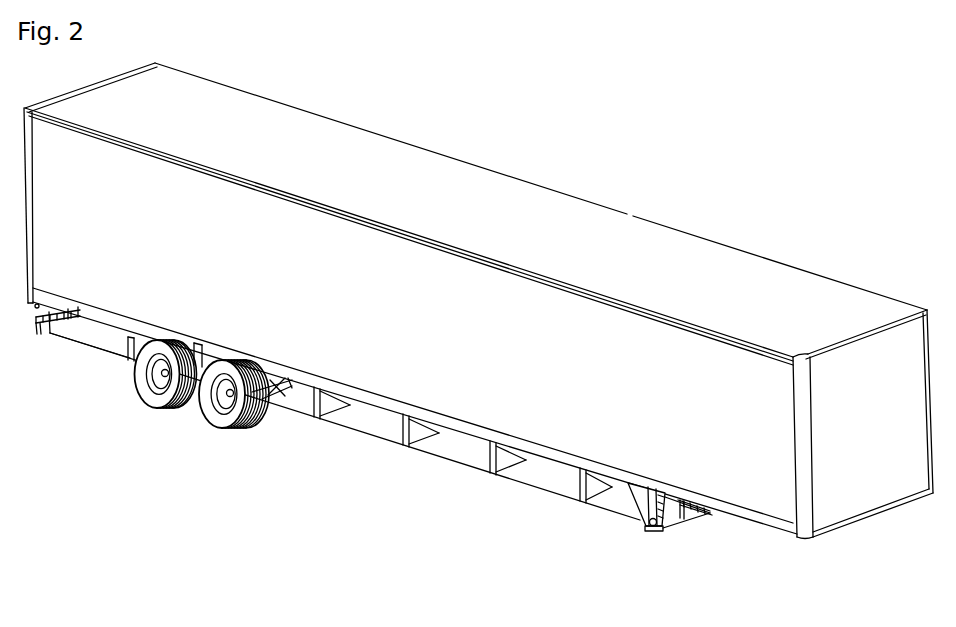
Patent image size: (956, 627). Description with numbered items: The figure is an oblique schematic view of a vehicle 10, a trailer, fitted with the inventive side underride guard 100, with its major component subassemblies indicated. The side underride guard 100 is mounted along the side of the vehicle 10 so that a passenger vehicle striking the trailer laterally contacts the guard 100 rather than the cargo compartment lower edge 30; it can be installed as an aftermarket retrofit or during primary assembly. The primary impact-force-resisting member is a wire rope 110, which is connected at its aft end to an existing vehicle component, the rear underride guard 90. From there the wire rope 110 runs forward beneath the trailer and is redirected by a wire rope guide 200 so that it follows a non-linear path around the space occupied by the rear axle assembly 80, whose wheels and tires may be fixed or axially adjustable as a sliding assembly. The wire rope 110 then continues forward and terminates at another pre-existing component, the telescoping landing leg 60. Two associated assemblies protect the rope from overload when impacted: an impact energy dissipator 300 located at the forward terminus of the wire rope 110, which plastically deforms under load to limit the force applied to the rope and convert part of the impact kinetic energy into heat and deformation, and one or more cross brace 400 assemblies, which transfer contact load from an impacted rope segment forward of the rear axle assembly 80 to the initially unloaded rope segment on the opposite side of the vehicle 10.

The vehicle 10 is at (548, 171).
The cargo compartment lower edge 30 is at (80, 321).
The telescoping landing leg 60 is at (653, 532).
The sliding rear axle assembly 80 is at (228, 429).
The rear underride guard 90 is at (37, 336).
The side underride guard 100 is at (470, 487).
The wire rope 110 is at (112, 358).
The wire rope guide 200 is at (178, 420).
The impact energy dissipator 300 is at (628, 534).
The cross brace 400 is at (387, 434).